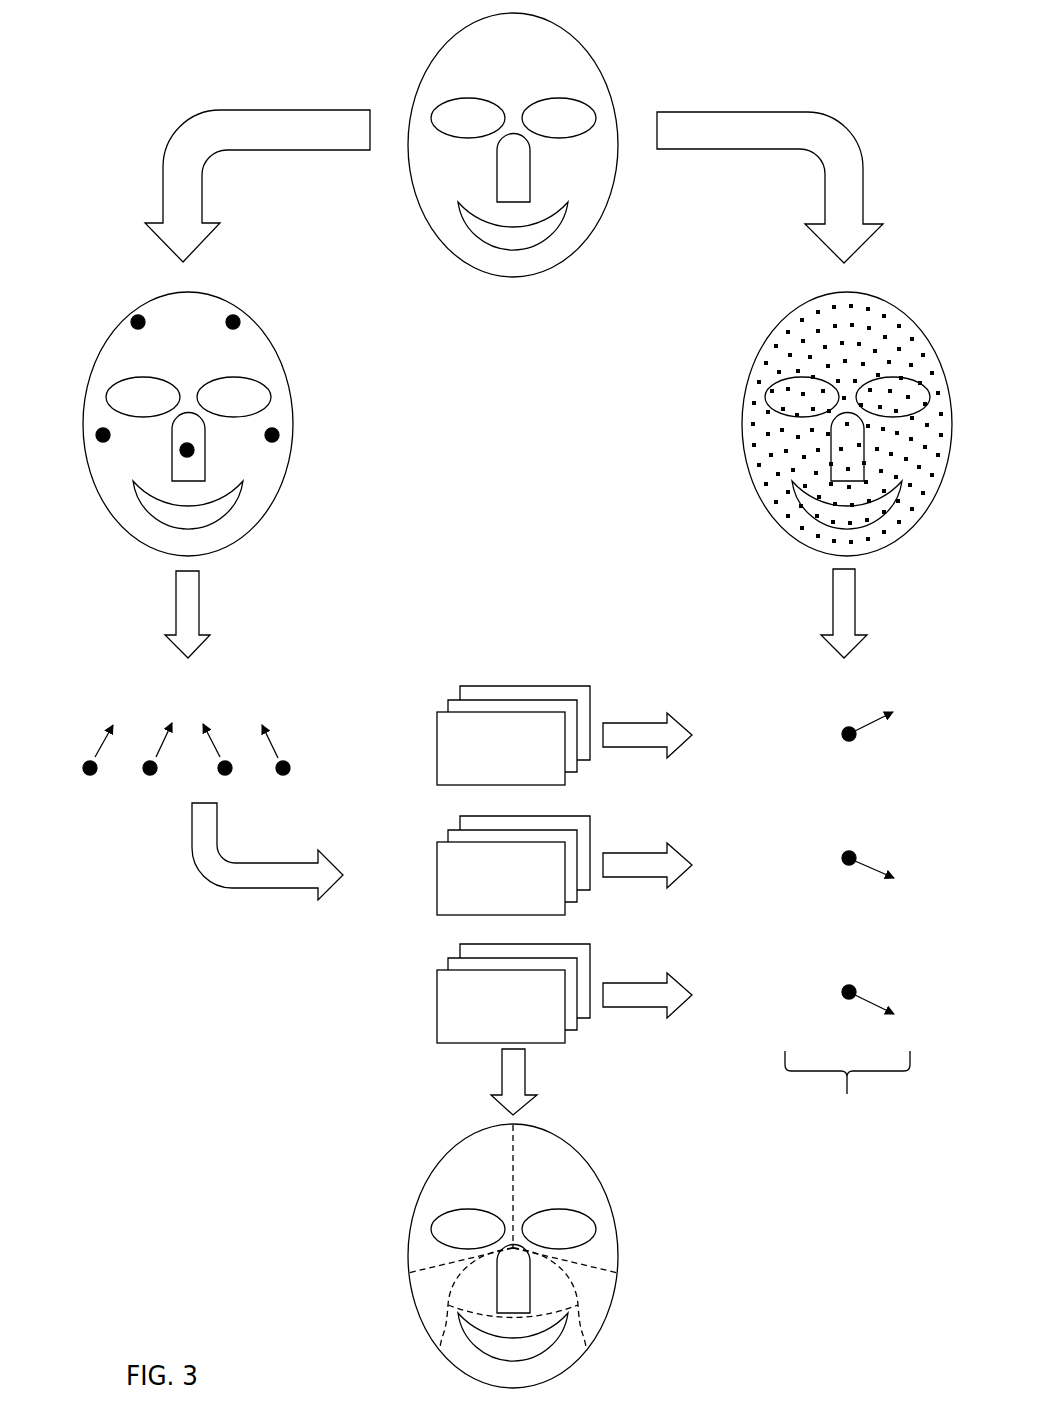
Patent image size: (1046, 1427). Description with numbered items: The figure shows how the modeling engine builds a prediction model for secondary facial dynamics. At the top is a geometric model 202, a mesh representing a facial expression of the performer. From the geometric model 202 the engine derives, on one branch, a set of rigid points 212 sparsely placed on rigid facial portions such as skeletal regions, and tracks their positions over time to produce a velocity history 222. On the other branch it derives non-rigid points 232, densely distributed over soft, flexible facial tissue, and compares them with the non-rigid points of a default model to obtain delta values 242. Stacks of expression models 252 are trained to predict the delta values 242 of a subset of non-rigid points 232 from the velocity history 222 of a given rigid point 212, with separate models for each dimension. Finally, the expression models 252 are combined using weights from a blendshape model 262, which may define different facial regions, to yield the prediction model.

The geometric model 202 is at (420, 78).
The rigid points 212 is at (280, 435).
The velocity history 222 is at (168, 692).
The non-rigid points 232 is at (758, 380).
The delta values 242 is at (847, 921).
The expression models 252 is at (482, 759).
The blendshape model 262 is at (615, 1217).